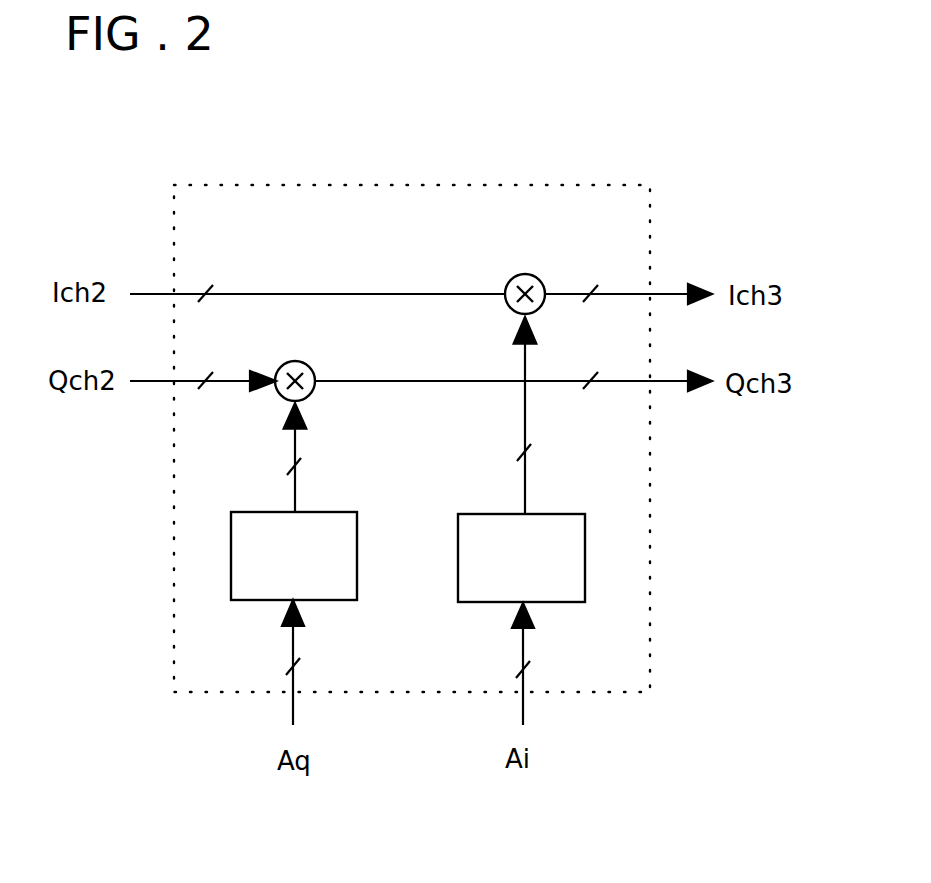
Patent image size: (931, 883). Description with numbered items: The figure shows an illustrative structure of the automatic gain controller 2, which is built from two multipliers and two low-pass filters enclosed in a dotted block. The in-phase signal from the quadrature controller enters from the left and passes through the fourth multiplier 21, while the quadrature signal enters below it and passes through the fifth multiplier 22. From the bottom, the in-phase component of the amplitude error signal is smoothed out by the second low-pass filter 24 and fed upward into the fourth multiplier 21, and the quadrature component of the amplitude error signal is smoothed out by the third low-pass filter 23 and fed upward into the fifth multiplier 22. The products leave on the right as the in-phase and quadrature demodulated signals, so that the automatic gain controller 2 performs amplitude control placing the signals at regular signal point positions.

The automatic gain controller 2 is at (215, 184).
The fourth multiplier 21 is at (535, 278).
The fifth multiplier 22 is at (312, 369).
The third low-pass filter 23 is at (338, 512).
The second low-pass filter 24 is at (553, 514).